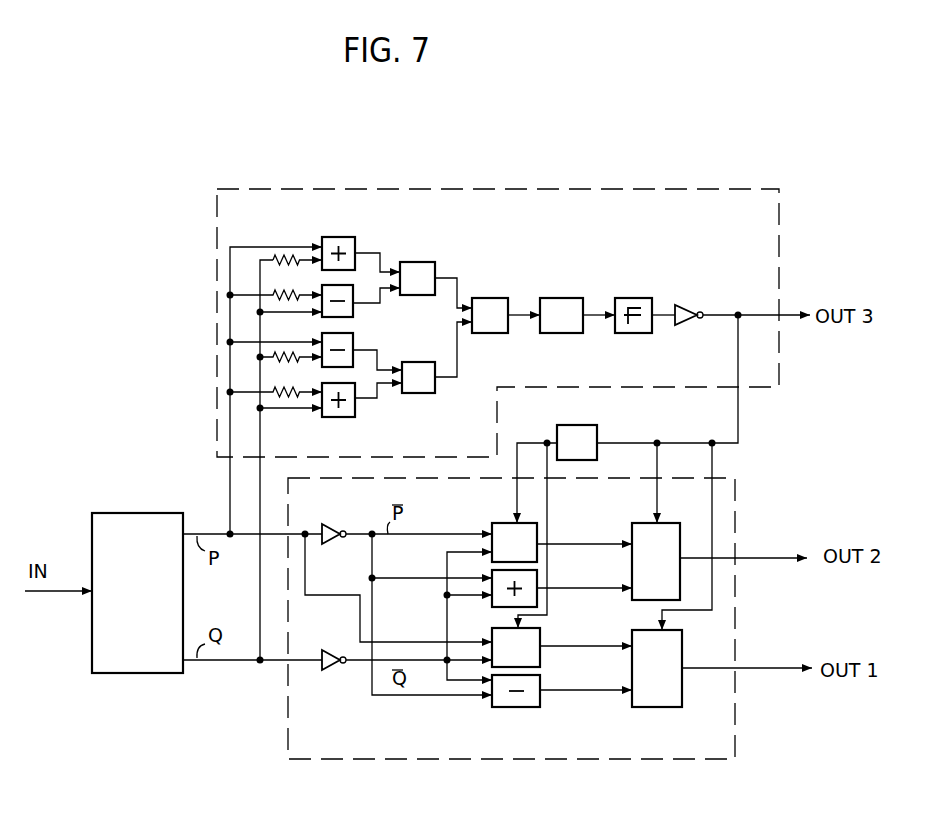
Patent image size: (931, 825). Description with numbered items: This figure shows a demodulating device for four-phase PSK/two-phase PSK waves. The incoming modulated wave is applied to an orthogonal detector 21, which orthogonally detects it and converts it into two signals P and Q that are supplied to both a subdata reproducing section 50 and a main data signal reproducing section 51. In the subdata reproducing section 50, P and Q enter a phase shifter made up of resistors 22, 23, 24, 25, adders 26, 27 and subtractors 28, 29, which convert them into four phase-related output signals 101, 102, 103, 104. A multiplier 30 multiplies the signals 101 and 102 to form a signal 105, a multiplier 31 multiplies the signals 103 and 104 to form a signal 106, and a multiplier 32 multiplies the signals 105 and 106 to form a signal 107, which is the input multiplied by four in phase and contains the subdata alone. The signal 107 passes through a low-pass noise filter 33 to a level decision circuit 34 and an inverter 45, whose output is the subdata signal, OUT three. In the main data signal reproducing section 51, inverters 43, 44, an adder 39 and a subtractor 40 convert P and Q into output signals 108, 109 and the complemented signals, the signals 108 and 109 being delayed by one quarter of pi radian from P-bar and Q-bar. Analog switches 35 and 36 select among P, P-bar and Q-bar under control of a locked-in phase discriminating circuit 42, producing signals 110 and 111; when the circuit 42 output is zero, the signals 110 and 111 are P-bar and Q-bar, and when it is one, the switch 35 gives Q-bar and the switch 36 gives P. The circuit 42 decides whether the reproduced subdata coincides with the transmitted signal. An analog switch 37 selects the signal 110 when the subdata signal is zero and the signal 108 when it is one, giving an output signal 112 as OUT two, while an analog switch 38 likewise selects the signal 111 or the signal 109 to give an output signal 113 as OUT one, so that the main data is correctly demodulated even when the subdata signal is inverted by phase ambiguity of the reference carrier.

The orthogonal detector 21 is at (134, 513).
The resistor 22 is at (270, 259).
The resistor 23 is at (290, 291).
The resistor 24 is at (292, 352).
The resistor 25 is at (290, 390).
The adder 26 is at (356, 237).
The adder 27 is at (338, 417).
The subtractor 28 is at (353, 315).
The subtractor 29 is at (353, 345).
The multiplier 30 is at (430, 262).
The multiplier 31 is at (420, 362).
The multiplier 32 is at (504, 298).
The low-pass noise filter 33 is at (563, 298).
The level decision circuit 34 is at (624, 298).
The analog switch 35 is at (492, 523).
The analog switch 36 is at (540, 632).
The analog switch 37 is at (632, 532).
The analog switch 38 is at (682, 658).
The adder 39 is at (492, 605).
The subtractor 40 is at (540, 705).
The locked-in phase discriminating circuit 42 is at (557, 428).
The inverter 43 is at (335, 528).
The inverter 44 is at (330, 650).
The inverter 45 is at (688, 305).
The subdata reproducing section 50 is at (612, 189).
The main data signal reproducing section 51 is at (595, 760).
The output signal 101 is at (383, 262).
The output signal 102 is at (385, 300).
The output signal 103 is at (390, 385).
The output signal 104 is at (379, 398).
The output signal 105 is at (457, 282).
The output signal 106 is at (460, 378).
The output signal 107 is at (520, 322).
The output signal 108 is at (592, 586).
The output signal 109 is at (570, 672).
The output signal 110 is at (582, 540).
The output signal 111 is at (602, 644).
The output signal 112 is at (762, 556).
The output signal 113 is at (772, 666).